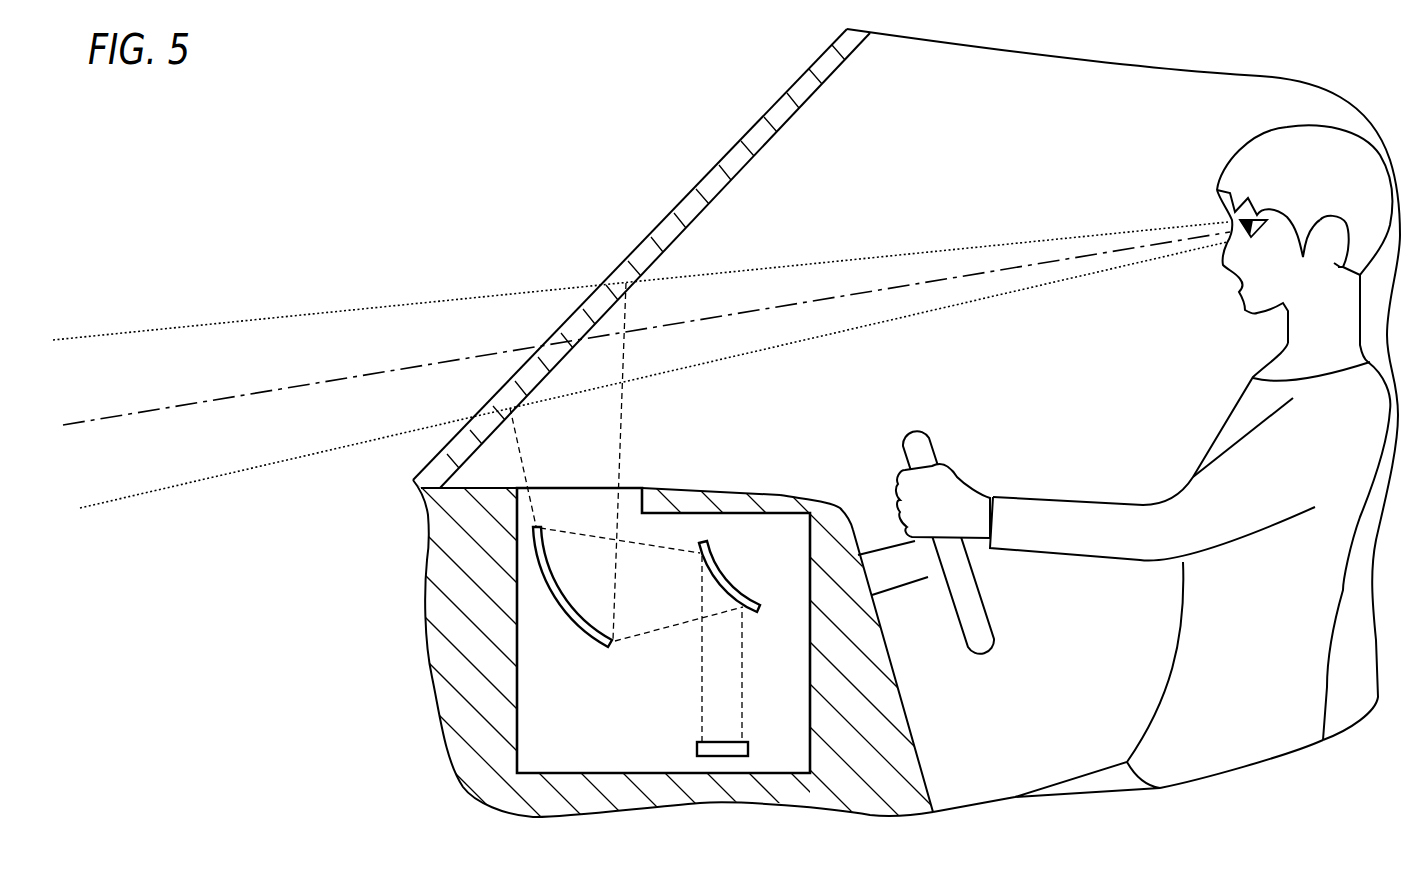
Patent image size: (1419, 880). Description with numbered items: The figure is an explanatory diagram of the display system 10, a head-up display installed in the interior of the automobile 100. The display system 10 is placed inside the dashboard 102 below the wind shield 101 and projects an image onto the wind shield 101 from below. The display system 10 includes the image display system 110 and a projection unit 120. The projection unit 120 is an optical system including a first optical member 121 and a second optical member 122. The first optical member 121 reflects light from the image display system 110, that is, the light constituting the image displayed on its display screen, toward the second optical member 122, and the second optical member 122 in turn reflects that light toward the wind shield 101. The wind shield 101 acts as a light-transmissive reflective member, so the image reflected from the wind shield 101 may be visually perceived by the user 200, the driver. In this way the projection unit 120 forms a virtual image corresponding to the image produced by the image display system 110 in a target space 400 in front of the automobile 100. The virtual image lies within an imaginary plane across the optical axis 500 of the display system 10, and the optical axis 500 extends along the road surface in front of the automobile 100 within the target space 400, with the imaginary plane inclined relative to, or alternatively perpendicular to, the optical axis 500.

The display system 10 is at (710, 775).
The automobile 100 is at (424, 622).
The wind shield 101 is at (764, 123).
The dashboard 102 is at (907, 738).
The image display system 110 is at (735, 745).
The projection unit 120 is at (646, 631).
The first optical member 121 is at (739, 602).
The second optical member 122 is at (583, 630).
The user 200 is at (1257, 152).
The target space 400 is at (168, 328).
The optical axis 500 is at (118, 417).